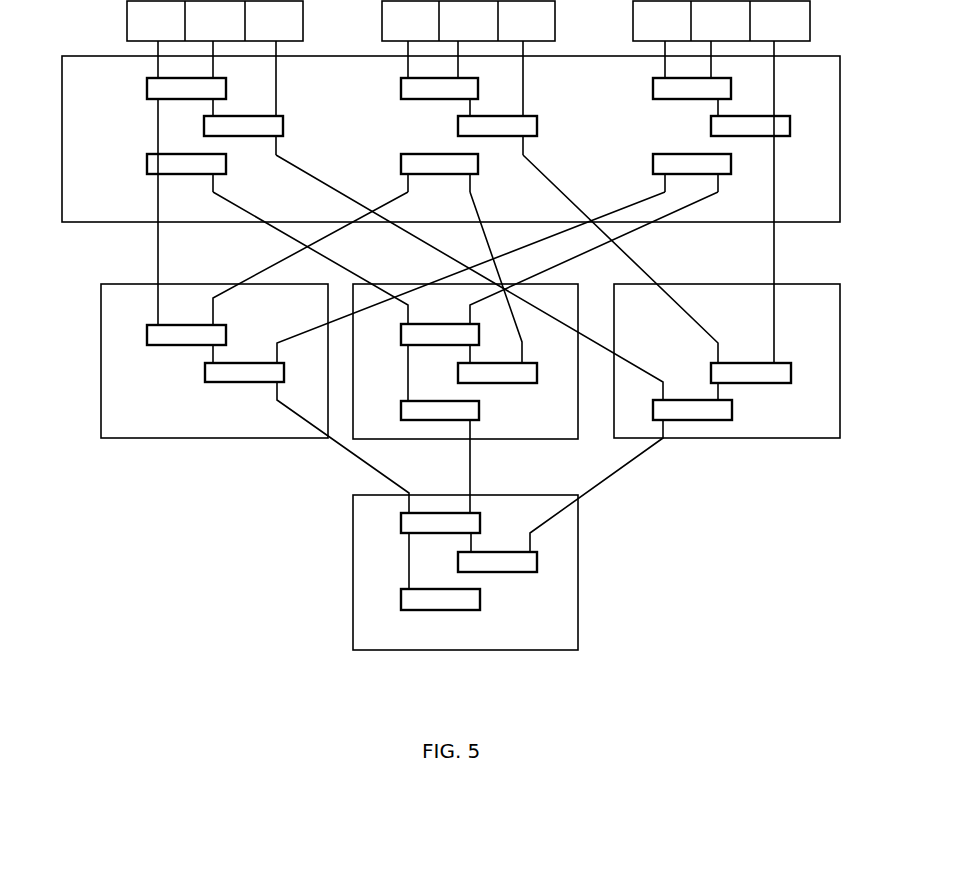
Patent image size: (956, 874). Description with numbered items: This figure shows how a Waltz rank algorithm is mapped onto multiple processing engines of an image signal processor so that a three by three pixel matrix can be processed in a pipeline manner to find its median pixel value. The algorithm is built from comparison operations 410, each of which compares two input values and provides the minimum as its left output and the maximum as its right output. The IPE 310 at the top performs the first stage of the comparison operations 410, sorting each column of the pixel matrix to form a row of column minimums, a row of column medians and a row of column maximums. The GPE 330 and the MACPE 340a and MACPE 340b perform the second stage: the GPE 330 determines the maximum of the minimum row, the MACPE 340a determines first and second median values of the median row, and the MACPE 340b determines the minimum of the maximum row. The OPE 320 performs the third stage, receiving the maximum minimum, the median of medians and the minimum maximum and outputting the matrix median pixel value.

The IPE 310 is at (451, 202).
The OPE 320 is at (465, 572).
The GPE 330 is at (214, 361).
The MACPE 340a is at (465, 398).
The MACPE 340b is at (727, 361).
The comparison operation 410 is at (146, 87).